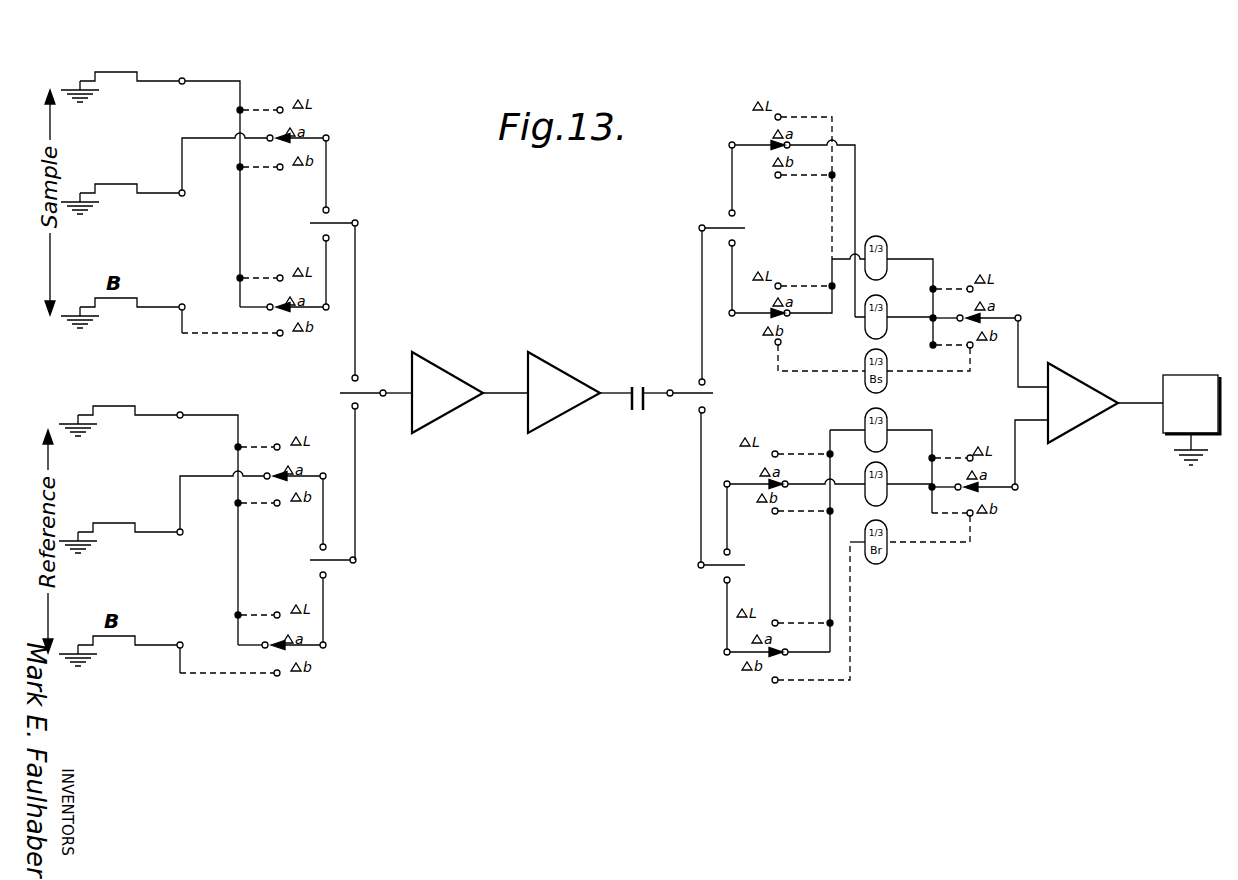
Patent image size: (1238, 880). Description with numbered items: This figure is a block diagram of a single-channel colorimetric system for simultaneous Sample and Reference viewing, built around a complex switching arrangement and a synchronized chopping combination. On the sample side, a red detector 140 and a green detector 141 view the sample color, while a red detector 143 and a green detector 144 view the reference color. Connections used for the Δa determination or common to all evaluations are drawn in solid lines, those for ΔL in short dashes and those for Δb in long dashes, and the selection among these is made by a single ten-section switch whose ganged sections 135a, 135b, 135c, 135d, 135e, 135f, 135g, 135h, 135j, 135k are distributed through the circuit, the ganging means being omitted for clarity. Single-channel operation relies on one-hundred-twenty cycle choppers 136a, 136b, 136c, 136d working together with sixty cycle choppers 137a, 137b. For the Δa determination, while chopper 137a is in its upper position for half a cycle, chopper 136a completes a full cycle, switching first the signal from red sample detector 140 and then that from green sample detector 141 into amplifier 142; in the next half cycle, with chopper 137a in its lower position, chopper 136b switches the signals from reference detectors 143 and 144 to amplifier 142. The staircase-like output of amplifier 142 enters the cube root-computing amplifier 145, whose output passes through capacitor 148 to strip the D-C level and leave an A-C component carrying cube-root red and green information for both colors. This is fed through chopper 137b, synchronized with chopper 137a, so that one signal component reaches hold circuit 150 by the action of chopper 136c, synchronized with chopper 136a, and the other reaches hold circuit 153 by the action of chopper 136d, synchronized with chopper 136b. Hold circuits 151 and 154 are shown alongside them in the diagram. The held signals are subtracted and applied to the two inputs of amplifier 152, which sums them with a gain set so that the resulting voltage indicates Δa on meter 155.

The green sample detector 141 is at (118, 83).
The red sample detector 140 is at (118, 195).
The green reference detector 144 is at (111, 417).
The red reference detector 143 is at (114, 534).
The switch section 135a is at (328, 136).
The switch section 135b is at (328, 303).
The switch section 135c is at (325, 475).
The switch section 135d is at (326, 647).
The switch section 135e is at (734, 142).
The switch section 135f is at (748, 318).
The switch section 135g is at (755, 482).
The switch section 135h is at (747, 657).
The switch section 135j is at (1000, 490).
The switch section 135k is at (1019, 316).
The 120 c.p.s. chopper 136a is at (342, 222).
The 120 c.p.s. chopper 136b is at (337, 563).
The 120 c.p.s. chopper 136c is at (718, 226).
The 120 c.p.s. chopper 136d is at (713, 568).
The 60 c.p.s. chopper 137a is at (374, 387).
The 60 c.p.s. chopper 137b is at (700, 380).
The amplifier 142 is at (447, 392).
The cube root-computing amplifier 145 is at (564, 392).
The capacitor 148 is at (634, 412).
The hold circuit 150 is at (880, 237).
The potentiometer (1/3 Rs) 151 is at (902, 300).
The amplifier 152 is at (1083, 403).
The hold circuit 153 is at (888, 424).
The potentiometer (1/3 Rr) 154 is at (906, 463).
The meter 155 is at (1191, 420).